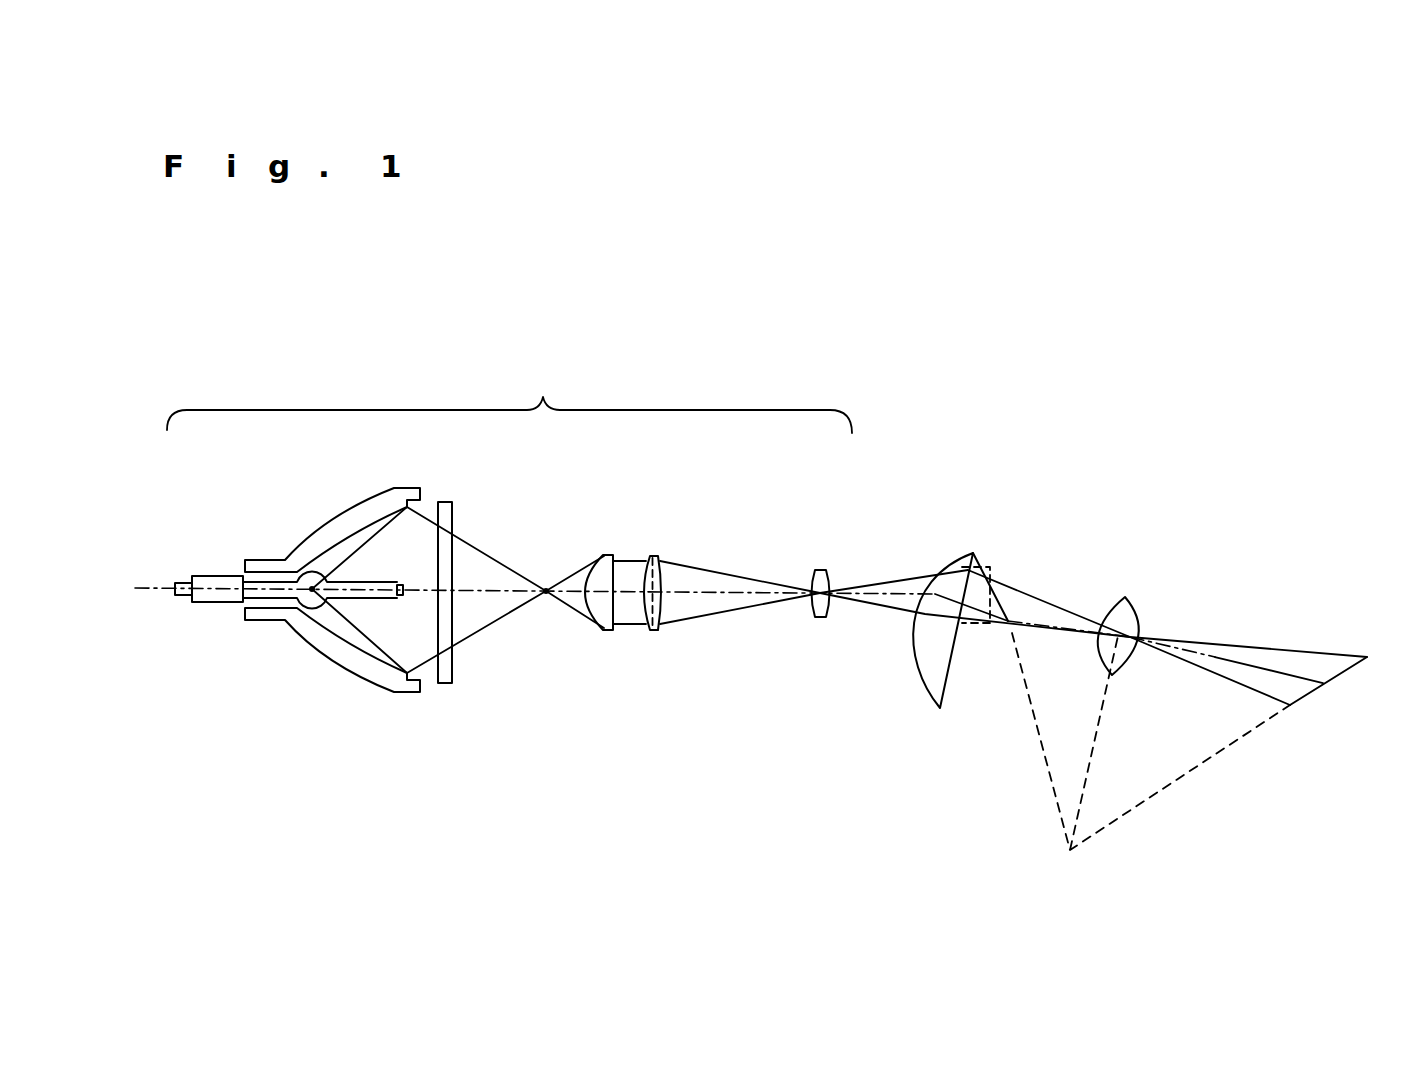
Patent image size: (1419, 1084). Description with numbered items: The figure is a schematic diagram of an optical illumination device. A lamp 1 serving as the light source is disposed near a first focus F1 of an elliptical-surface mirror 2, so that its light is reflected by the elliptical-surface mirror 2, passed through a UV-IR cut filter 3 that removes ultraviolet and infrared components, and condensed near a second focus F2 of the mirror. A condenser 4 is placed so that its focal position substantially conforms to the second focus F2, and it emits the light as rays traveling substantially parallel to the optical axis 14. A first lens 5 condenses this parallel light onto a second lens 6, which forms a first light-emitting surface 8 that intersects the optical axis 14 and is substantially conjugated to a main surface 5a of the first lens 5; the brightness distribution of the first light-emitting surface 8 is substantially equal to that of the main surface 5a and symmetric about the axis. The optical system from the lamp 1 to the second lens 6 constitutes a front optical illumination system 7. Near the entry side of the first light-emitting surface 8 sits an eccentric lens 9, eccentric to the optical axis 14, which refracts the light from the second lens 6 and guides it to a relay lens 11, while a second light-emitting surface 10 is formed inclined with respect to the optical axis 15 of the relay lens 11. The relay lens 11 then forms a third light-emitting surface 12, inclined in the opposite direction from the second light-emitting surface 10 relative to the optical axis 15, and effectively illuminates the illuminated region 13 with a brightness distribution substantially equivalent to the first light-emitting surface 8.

The lamp 1 is at (205, 575).
The elliptical-surface mirror 2 is at (322, 518).
The UV-IR cut filter 3 is at (445, 502).
The condenser 4 is at (606, 555).
The first lens 5 is at (654, 556).
The main surface 5a is at (652, 628).
The second lens 6 is at (820, 568).
The front optical illumination system 7 is at (509, 395).
The first light-emitting surface 8 is at (993, 565).
The eccentric lens 9 is at (932, 700).
The second light-emitting surface 10 is at (1008, 622).
The relay lens 11 is at (1125, 597).
The third light-emitting surface 12 is at (1367, 658).
The illuminated region 13 is at (1310, 697).
The optical axis 14 is at (487, 595).
The optical axis 15 is at (1243, 658).
The first focus F1 is at (311, 607).
The second focus F2 is at (546, 596).